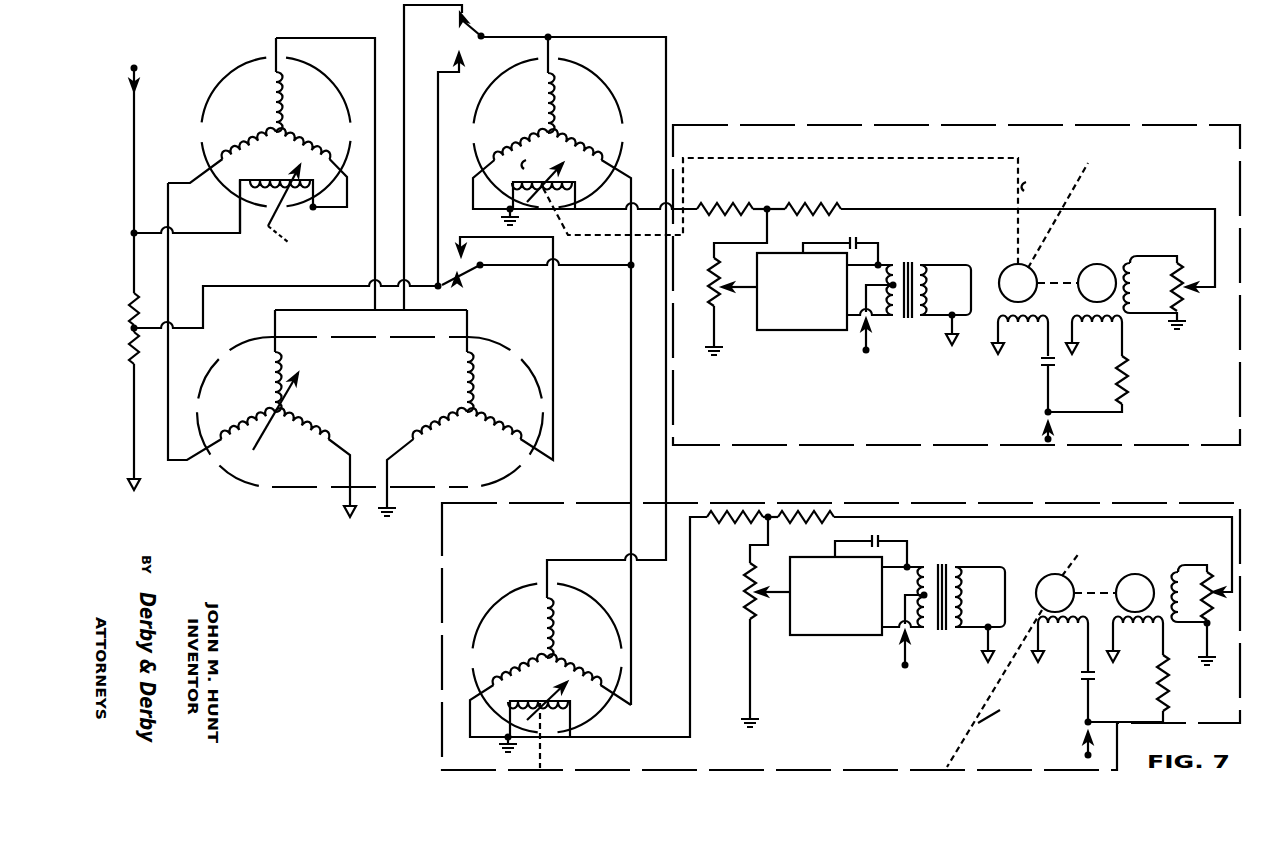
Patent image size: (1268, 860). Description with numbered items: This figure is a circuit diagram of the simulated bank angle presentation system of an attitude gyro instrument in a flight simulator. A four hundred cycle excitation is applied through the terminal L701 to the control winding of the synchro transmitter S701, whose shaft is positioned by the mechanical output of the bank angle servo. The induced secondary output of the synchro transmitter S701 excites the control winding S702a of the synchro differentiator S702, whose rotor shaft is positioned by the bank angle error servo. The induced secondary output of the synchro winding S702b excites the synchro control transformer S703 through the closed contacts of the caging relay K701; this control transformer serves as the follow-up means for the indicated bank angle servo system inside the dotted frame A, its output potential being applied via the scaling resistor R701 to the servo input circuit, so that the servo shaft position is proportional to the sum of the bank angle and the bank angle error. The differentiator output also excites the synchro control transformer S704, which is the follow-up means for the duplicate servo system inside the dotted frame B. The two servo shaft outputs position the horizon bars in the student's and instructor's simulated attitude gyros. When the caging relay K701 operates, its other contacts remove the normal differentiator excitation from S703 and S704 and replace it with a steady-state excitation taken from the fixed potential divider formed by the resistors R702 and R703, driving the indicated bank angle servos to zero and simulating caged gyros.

The terminal L701 is at (145, 67).
The resistor R702 is at (121, 316).
The resistor R703 is at (121, 349).
The synchro transmitter S701 is at (259, 146).
The synchro differentiator S702 is at (375, 377).
The control winding S702a is at (283, 413).
The synchro winding S702b is at (465, 376).
The caging relay K701 is at (535, 301).
The synchro control transformer S703 is at (745, 371).
The synchro control transformer S704 is at (588, 642).
The scaling resistor R701 is at (754, 199).
The dotted frame A is at (1146, 125).
The dotted frame B is at (1243, 624).